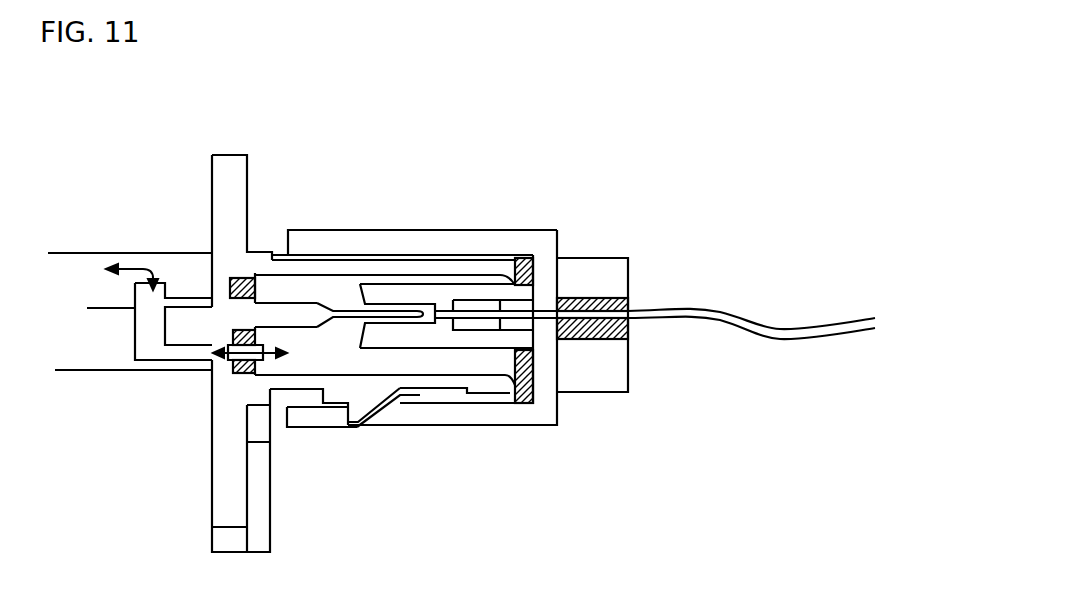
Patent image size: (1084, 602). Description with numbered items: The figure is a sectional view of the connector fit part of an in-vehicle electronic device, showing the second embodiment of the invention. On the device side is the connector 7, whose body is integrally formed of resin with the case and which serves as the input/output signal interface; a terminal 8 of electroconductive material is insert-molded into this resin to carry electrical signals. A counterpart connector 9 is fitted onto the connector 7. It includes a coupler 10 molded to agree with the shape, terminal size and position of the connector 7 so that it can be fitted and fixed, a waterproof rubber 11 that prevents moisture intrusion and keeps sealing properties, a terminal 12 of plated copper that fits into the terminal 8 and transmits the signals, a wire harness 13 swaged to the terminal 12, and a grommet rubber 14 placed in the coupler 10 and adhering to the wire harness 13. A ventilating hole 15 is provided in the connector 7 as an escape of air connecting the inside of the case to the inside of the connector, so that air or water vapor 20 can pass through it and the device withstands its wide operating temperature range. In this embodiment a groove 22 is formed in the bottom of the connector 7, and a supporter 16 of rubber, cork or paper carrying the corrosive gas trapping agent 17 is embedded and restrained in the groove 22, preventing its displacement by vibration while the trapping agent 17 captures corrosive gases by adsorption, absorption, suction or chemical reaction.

The connector 7 is at (292, 378).
The terminal 8 is at (382, 303).
The counterpart connector 9 is at (444, 230).
The coupler 10 is at (523, 242).
The waterproof rubber 11 is at (514, 374).
The terminal 12 is at (443, 322).
The wire harness 13 is at (688, 311).
The grommet rubber 14 is at (594, 334).
The ventilating hole 15 is at (148, 347).
The supporter 16 is at (371, 247).
The corrosive gas trapping agent 17 is at (258, 276).
The air or water vapor 20 is at (134, 260).
The groove 22 is at (321, 247).